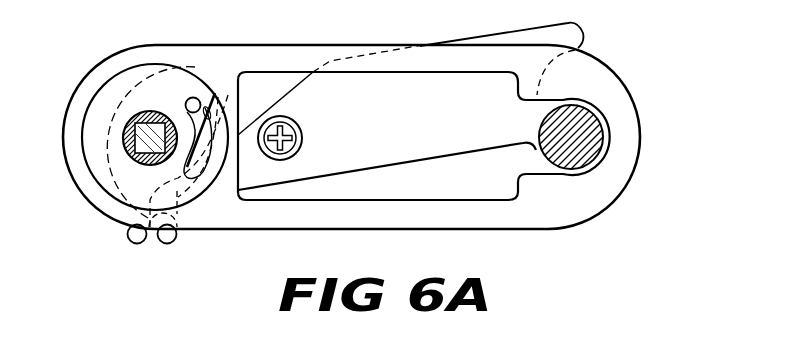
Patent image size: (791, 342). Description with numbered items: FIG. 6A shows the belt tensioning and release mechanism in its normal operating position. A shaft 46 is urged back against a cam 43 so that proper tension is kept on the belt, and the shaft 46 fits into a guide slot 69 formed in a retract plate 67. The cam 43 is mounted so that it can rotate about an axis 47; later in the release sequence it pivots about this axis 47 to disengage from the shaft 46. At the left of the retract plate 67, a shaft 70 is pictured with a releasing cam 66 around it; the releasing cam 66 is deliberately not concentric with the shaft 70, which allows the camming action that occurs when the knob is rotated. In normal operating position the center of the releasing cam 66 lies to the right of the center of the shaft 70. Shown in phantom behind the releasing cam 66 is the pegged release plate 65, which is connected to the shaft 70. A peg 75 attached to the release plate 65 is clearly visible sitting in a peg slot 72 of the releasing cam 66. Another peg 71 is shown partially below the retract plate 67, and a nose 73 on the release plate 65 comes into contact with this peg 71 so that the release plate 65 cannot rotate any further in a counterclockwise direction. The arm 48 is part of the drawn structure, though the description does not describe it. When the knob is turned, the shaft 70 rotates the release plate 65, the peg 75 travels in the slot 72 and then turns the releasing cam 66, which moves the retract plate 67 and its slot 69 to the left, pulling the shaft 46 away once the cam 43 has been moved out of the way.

The cam 43 is at (386, 164).
The shaft 46 is at (569, 111).
The axis 47 is at (288, 118).
The arm 48 is at (584, 36).
The release plate 65 is at (91, 186).
The releasing cam 66 is at (176, 205).
The retract plate 67 is at (300, 48).
The guide slot 69 is at (526, 172).
The shaft 70 is at (144, 163).
The peg 71 is at (167, 240).
The peg slot 72 is at (210, 96).
The nose 73 is at (137, 241).
The peg 75 is at (186, 106).